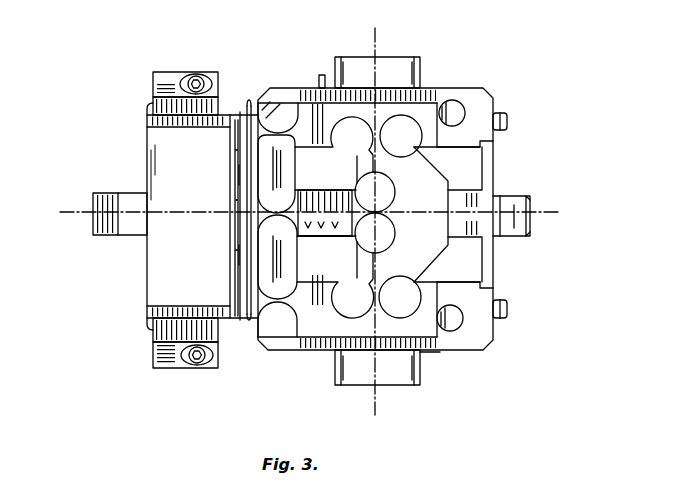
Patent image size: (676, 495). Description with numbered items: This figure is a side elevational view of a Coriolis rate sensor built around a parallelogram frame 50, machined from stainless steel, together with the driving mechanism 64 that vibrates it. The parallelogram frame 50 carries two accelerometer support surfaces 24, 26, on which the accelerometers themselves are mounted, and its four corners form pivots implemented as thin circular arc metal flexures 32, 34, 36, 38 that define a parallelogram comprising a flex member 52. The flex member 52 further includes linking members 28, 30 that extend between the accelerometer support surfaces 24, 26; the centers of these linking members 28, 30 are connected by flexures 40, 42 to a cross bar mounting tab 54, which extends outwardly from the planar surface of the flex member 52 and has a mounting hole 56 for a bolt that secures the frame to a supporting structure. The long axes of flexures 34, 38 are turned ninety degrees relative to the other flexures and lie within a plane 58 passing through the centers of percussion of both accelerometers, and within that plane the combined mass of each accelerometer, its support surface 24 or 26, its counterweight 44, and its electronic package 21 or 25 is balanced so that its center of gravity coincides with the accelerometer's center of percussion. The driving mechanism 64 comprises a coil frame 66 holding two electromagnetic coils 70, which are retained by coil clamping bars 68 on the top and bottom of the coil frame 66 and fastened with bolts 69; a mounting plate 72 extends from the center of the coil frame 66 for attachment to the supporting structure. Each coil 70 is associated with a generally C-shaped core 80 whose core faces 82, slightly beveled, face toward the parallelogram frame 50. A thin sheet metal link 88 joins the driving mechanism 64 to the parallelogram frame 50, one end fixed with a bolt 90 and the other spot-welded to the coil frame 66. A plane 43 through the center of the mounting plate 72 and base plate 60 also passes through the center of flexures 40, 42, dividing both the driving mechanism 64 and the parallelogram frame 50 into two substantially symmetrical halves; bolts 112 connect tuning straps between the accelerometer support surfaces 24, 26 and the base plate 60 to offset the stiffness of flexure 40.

The electronic package 21 is at (428, 85).
The accelerometer support surface 24 is at (313, 88).
The electronic package 25 is at (426, 354).
The accelerometer support surface 26 is at (320, 352).
The linking member 28 is at (250, 197).
The linking member 30 is at (428, 188).
The flexure 32 is at (280, 130).
The flexure 34 is at (380, 136).
The flexure 36 is at (262, 341).
The flexure 38 is at (380, 297).
The flexure 40 is at (283, 212).
The flexure 42 is at (383, 214).
The plane 43 is at (563, 214).
The counterweight 44 is at (420, 65).
The parallelogram frame 50 is at (500, 88).
The flex member 52 is at (484, 338).
The cross bar mounting tab 54 is at (318, 205).
The mounting hole 56 is at (330, 236).
The plane 58 is at (378, 40).
The base plate 60 is at (530, 196).
The driving mechanism 64 is at (145, 213).
The coil frame 66 is at (152, 150).
The coil clamping bar 68 is at (155, 80).
The bolt 69 is at (198, 74).
The electromagnetic coil 70 is at (147, 115).
The mounting plate 72 is at (93, 232).
The core 80 is at (230, 148).
The core face 82 is at (250, 100).
The sheet metal link 88 is at (232, 222).
The bolt 90 is at (232, 270).
The bolt 112 is at (507, 124).